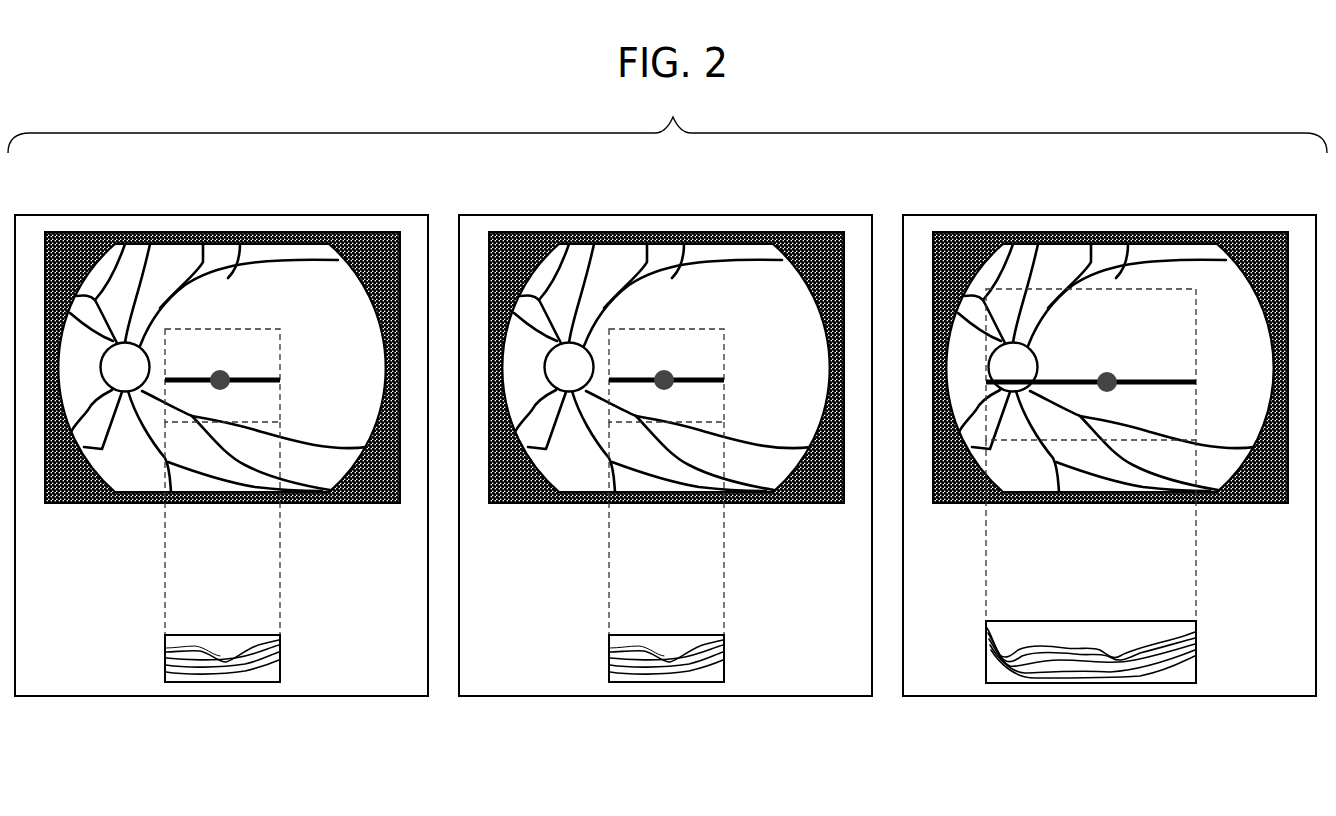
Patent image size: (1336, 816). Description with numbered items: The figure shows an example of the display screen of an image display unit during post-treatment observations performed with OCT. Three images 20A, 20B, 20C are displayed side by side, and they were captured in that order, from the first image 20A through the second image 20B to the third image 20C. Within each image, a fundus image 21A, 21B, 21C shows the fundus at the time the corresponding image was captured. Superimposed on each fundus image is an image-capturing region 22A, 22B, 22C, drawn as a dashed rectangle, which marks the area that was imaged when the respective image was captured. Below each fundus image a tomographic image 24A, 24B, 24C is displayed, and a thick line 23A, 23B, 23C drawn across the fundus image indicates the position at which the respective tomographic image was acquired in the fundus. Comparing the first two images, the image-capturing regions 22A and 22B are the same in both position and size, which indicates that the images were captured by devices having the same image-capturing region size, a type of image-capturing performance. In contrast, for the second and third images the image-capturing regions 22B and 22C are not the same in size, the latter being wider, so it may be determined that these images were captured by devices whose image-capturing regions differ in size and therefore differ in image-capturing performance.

The image 20A is at (207, 215).
The fundus image 21A is at (298, 232).
The image-capturing region 22A is at (243, 329).
The position of tomographic image 23A is at (275, 380).
The tomographic image 24A is at (231, 635).
The image 20B is at (665, 427).
The fundus image 21B is at (666, 337).
The image-capturing region 22B is at (672, 454).
The position of tomographic image 23B is at (690, 353).
The tomographic image 24B is at (666, 630).
The image 20C is at (1095, 215).
The fundus image 21C is at (1186, 232).
The image-capturing region 22C is at (1122, 289).
The position of tomographic image 23C is at (1173, 382).
The tomographic image 24C is at (1093, 621).